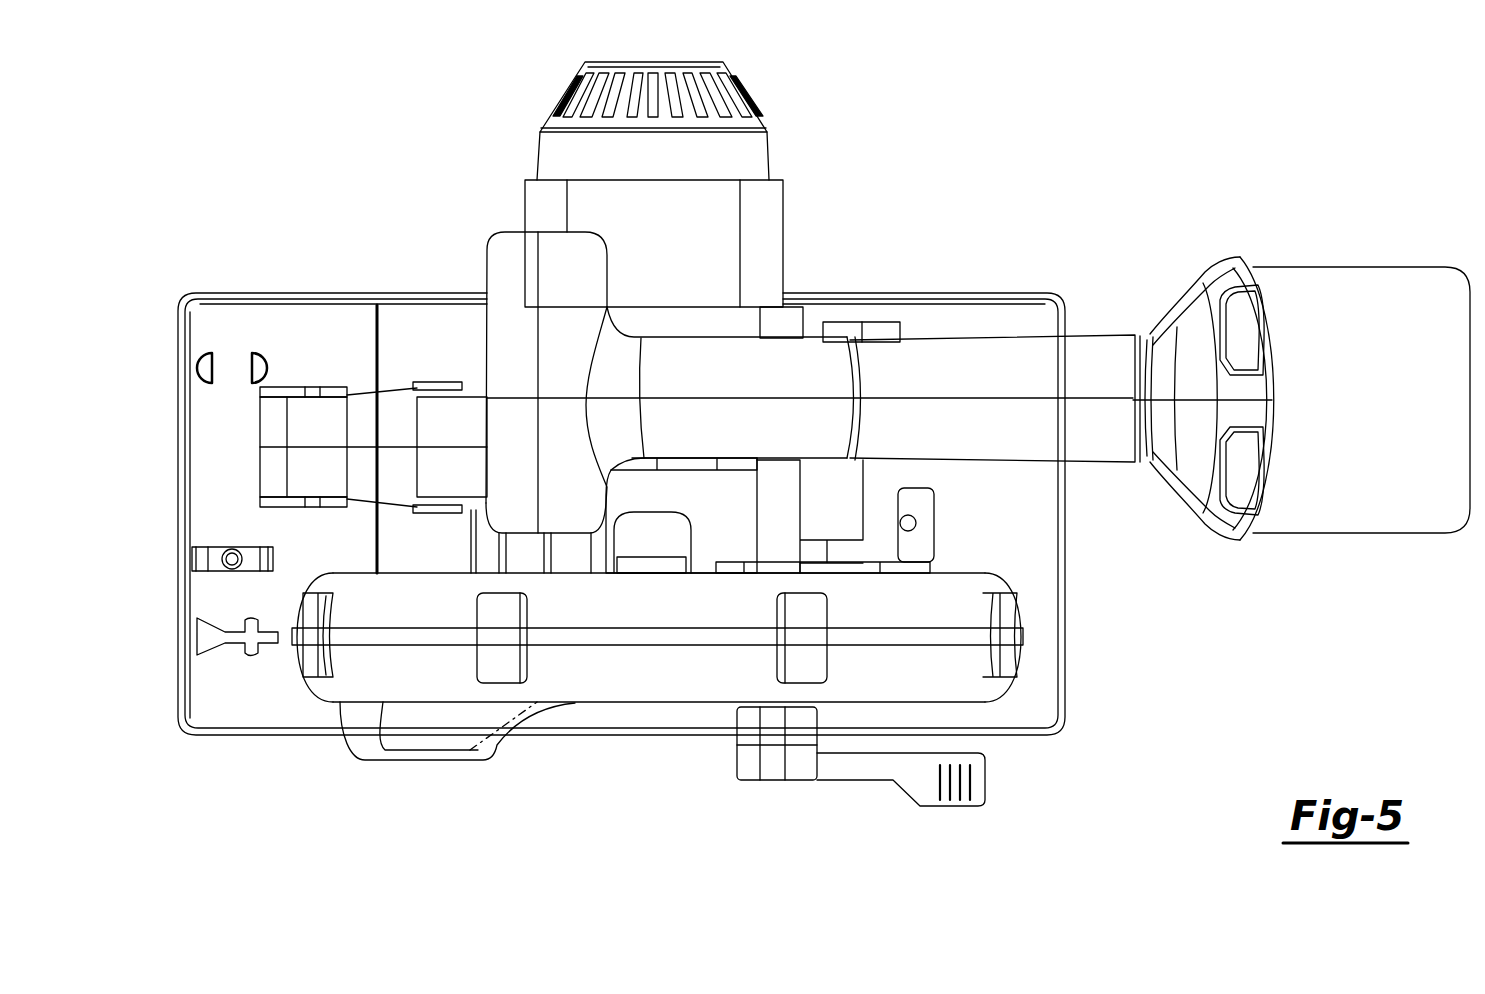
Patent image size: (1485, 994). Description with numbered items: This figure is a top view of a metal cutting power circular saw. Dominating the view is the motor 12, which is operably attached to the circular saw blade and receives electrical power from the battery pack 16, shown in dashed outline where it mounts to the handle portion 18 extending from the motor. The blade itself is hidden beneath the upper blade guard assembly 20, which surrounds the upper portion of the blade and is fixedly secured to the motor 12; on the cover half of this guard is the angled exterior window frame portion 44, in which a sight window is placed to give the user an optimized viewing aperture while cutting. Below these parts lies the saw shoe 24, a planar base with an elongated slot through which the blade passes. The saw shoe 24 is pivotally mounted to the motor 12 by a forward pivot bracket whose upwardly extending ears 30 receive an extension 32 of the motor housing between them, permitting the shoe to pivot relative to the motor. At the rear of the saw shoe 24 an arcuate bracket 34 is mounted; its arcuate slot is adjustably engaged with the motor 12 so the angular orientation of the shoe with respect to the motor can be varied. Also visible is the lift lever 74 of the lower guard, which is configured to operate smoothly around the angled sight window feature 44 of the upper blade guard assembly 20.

The motor 12 is at (768, 228).
The battery pack 16 is at (1355, 266).
The handle portion 18 is at (1090, 355).
The upper blade guard assembly 20 is at (665, 688).
The saw shoe 24 is at (1030, 598).
The upwardly extending ears 30 is at (302, 385).
The extension of the motor housing 32 is at (270, 472).
The arcuate bracket 34 is at (920, 562).
The angled exterior window frame portion 44 is at (492, 745).
The lift lever 74 is at (920, 790).